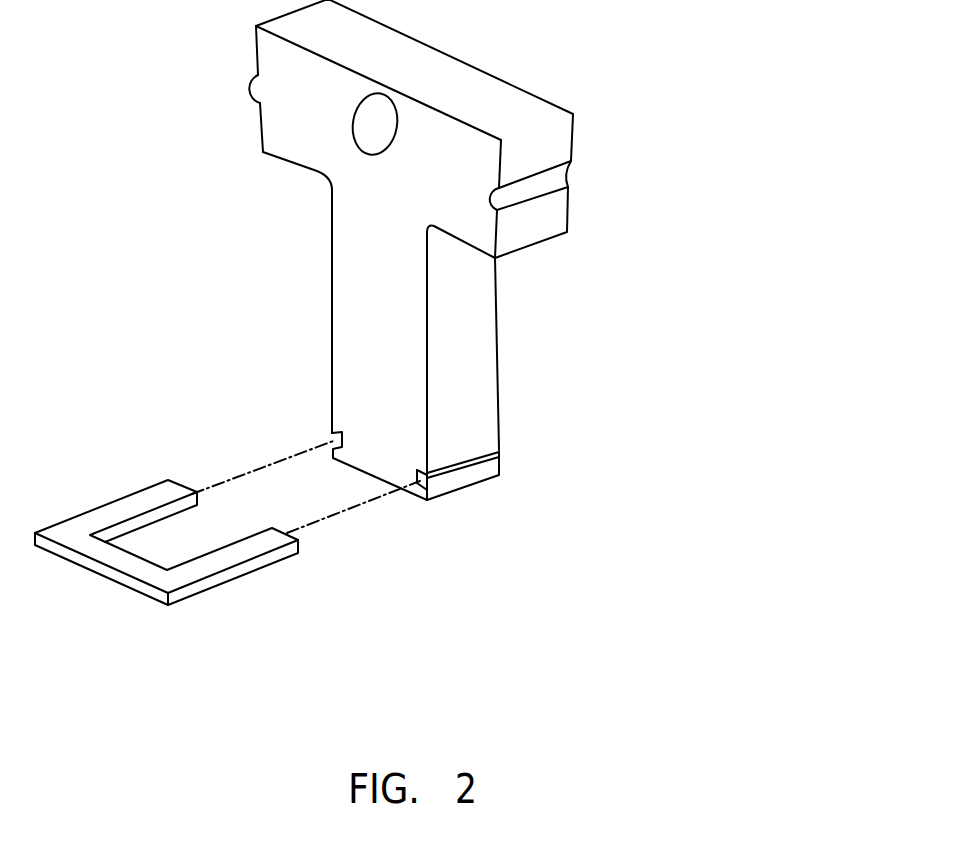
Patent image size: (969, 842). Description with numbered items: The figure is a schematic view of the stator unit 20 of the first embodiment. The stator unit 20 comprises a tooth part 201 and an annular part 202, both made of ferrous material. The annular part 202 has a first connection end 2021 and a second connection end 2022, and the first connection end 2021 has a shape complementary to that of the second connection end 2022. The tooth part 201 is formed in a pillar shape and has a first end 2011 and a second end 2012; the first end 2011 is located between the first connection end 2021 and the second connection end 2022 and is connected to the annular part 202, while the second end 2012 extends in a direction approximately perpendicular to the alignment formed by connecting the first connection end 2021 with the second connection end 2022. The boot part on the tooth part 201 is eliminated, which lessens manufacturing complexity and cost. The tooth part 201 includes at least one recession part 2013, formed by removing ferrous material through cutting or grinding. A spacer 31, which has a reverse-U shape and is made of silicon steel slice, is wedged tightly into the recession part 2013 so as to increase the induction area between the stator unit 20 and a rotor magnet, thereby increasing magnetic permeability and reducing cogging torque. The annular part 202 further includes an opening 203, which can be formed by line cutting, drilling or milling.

The stator unit 20 is at (404, 250).
The tooth part 201 is at (395, 345).
The first end 2011 is at (362, 213).
The second end 2012 is at (377, 452).
The recession part 2013 is at (497, 453).
The annular part 202 is at (404, 136).
The first connection end 2021 is at (252, 83).
The second connection end 2022 is at (552, 180).
The opening 203 is at (375, 115).
The spacer 31 is at (210, 570).